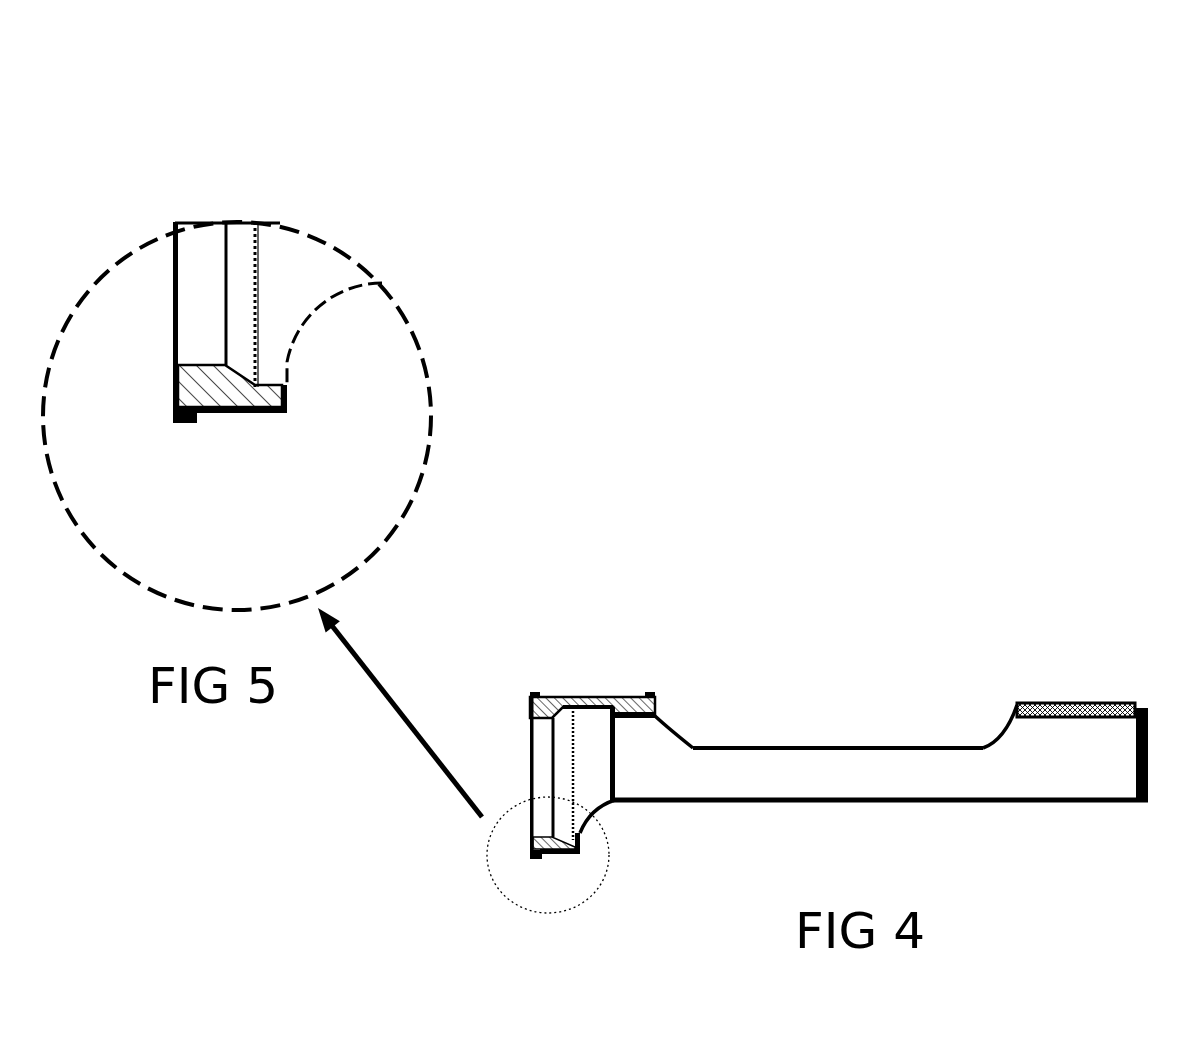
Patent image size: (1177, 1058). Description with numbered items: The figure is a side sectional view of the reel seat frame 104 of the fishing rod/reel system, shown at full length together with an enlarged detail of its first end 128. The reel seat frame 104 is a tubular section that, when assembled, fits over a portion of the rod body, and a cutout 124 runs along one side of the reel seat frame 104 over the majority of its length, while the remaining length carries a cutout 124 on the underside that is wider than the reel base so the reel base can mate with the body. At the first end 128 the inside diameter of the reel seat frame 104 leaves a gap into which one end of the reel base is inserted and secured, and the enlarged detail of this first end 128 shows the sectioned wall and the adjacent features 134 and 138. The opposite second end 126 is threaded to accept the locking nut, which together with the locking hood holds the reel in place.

In FIG. 4, the reel seat frame 104 is at (778, 785).
In FIG. 4, the cutout 124 is at (852, 742).
In FIG. 4, the second end of the reel seat frame 126 is at (1096, 695).
In FIG. 5, the first end of the reel seat frame 128 is at (330, 379).
In FIG. 4, the first end of the reel seat frame 128 is at (571, 689).
In FIG. 5, the inner wall 134 is at (248, 270).
In FIG. 5, the channel 138 is at (204, 250).